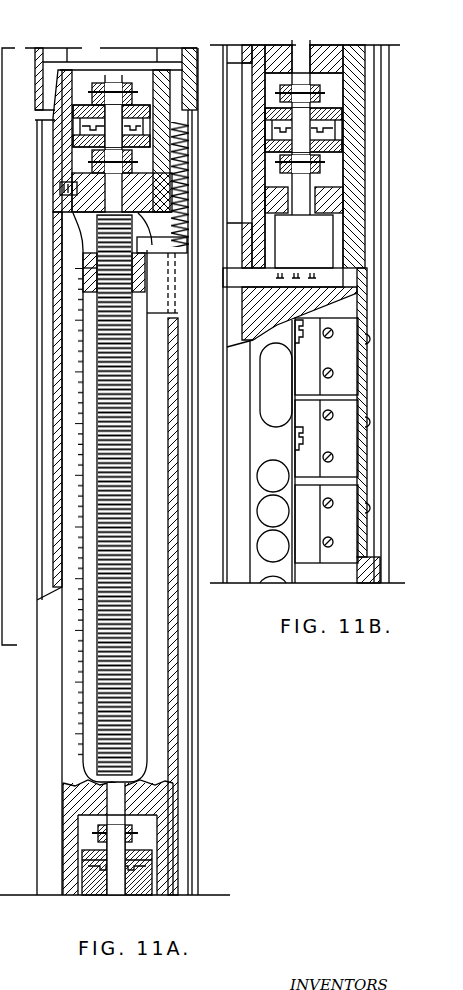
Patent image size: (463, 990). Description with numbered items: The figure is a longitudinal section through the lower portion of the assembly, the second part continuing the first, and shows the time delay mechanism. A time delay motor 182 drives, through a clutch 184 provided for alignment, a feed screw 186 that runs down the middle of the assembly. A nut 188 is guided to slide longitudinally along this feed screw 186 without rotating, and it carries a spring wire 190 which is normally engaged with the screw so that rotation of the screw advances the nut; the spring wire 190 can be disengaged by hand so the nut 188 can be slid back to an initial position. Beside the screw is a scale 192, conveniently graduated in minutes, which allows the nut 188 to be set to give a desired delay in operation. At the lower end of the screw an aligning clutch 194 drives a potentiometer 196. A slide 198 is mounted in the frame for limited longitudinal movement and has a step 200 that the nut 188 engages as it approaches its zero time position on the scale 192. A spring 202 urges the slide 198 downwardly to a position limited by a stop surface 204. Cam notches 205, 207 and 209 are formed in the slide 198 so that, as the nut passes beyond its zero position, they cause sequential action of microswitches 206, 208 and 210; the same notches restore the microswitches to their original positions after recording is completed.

In FIG. 11A, the time delay motor 182 is at (128, 55).
In FIG. 11A, the clutch 184 is at (82, 115).
In FIG. 11A, the feed screw 186 is at (92, 430).
In FIG. 11A, the nut 188 is at (140, 282).
In FIG. 11A, the spring wire 190 is at (97, 270).
In FIG. 11A, the scale 192 is at (67, 365).
In FIG. 11A, the aligning clutch 194 is at (145, 837).
In FIG. 11B, the aligning clutch 194 is at (330, 97).
In FIG. 11B, the potentiometer 196 is at (322, 247).
In FIG. 11A, the slide 198 is at (185, 642).
In FIG. 11B, the slide 198 is at (370, 118).
In FIG. 11A, the step 200 is at (144, 247).
In FIG. 11A, the spring 202 is at (180, 197).
In FIG. 11A, the stop surface 204 is at (171, 318).
In FIG. 11B, the cam notch 205 is at (367, 342).
In FIG. 11B, the microswitch 206 is at (352, 363).
In FIG. 11B, the cam notch 207 is at (367, 418).
In FIG. 11B, the microswitch 208 is at (350, 453).
In FIG. 11B, the cam notch 209 is at (364, 504).
In FIG. 11B, the microswitch 210 is at (352, 535).